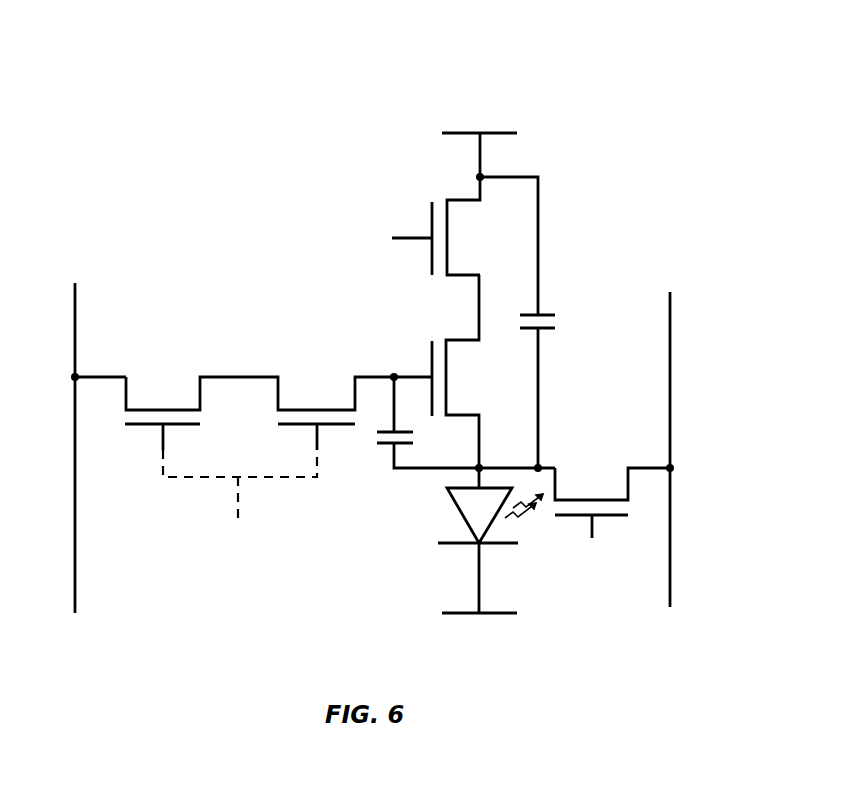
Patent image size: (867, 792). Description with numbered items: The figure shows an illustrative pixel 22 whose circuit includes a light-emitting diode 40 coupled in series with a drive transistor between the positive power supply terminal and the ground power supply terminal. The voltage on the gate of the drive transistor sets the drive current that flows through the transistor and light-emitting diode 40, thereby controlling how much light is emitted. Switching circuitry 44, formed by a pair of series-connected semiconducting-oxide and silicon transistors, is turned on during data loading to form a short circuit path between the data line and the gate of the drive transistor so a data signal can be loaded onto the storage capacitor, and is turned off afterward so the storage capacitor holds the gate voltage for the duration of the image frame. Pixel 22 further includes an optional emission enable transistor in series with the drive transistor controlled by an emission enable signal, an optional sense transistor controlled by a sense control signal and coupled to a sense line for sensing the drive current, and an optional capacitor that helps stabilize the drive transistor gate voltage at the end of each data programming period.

The pixel 22 is at (599, 100).
The light-emitting diode 40 is at (455, 507).
The switching circuitry 44 is at (364, 323).